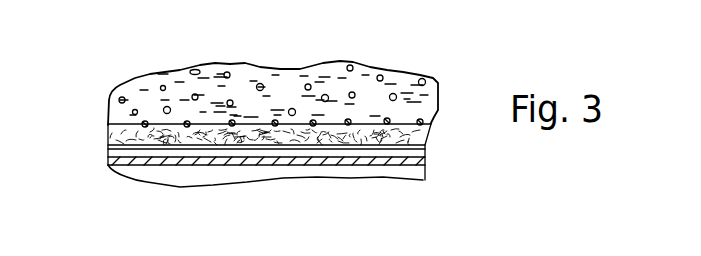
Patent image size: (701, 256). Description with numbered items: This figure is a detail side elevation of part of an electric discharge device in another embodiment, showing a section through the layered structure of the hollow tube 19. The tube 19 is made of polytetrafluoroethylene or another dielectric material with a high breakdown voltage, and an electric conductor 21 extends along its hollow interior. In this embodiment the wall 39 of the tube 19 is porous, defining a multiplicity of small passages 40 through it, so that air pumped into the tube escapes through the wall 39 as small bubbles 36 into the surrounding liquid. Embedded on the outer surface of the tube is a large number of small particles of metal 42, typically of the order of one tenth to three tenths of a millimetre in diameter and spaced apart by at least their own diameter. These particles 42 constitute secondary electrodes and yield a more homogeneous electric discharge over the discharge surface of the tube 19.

The hollow tube 19 is at (113, 126).
The electric conductor 21 is at (257, 158).
The small bubbles 36 is at (353, 67).
The wall 39 is at (345, 120).
The small passages 40 is at (190, 125).
The particles of metal 42 is at (188, 123).